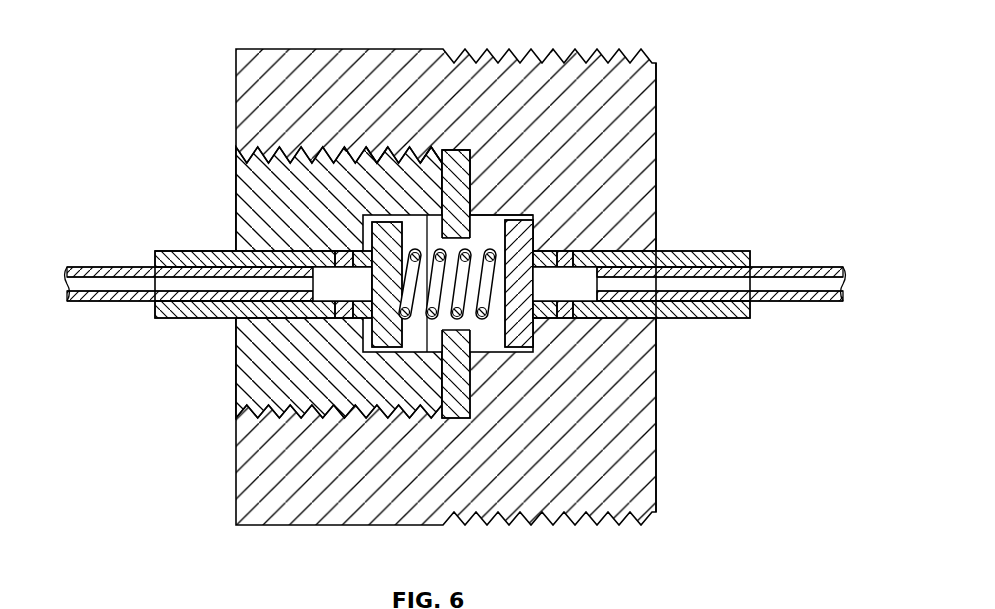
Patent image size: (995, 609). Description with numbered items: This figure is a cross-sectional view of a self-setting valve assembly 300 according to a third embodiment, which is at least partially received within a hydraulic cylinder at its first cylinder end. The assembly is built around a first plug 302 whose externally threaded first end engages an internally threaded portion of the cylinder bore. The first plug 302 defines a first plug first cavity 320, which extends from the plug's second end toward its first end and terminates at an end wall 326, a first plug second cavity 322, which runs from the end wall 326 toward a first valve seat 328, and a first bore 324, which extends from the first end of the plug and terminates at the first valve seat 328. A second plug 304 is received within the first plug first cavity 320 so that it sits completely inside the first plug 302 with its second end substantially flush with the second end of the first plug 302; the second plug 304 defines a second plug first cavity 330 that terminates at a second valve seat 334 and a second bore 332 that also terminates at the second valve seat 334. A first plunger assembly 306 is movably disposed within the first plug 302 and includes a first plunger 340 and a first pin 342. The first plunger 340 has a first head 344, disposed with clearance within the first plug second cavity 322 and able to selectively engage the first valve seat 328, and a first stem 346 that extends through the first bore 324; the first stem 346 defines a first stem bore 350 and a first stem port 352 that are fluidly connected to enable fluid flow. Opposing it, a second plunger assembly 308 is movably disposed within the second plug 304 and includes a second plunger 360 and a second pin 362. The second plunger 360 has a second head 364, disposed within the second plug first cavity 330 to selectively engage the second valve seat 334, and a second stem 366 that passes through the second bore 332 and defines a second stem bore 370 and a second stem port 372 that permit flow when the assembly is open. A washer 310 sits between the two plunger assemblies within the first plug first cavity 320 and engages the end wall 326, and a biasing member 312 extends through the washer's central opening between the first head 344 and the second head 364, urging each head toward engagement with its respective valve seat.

The self-setting valve assembly 300 is at (455, 262).
The first plug 302 is at (689, 72).
The second plug 304 is at (214, 397).
The first plunger assembly 306 is at (666, 241).
The second plunger assembly 308 is at (205, 295).
The washer 310 is at (469, 148).
The biasing member 312 is at (483, 322).
The first plug first cavity 320 is at (457, 148).
The first plug second cavity 322 is at (492, 232).
The first bore 324 is at (560, 251).
The end wall 326 is at (478, 149).
The first valve seat 328 is at (546, 236).
The second plug first cavity 330 is at (432, 157).
The second bore 332 is at (283, 250).
The second valve seat 334 is at (352, 250).
The first plunger 340 is at (489, 213).
The first pin 342 is at (802, 262).
The first head 344 is at (548, 330).
The first stem 346 is at (702, 328).
The first stem bore 350 is at (573, 318).
The first stem port 352 is at (560, 302).
The second plunger 360 is at (410, 330).
The second pin 362 is at (110, 302).
The second head 364 is at (372, 157).
The second stem 366 is at (185, 318).
The second stem bore 370 is at (322, 300).
The second stem port 372 is at (340, 251).